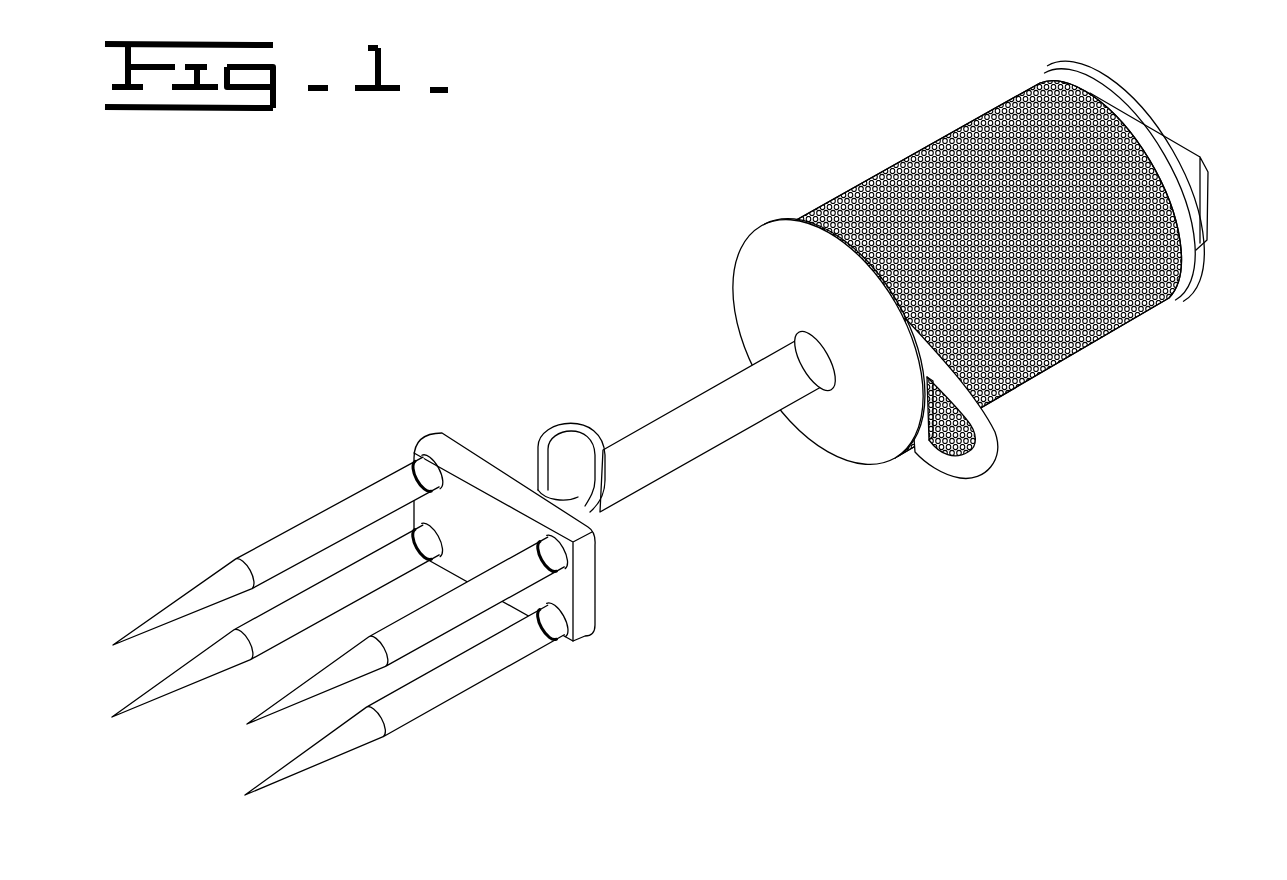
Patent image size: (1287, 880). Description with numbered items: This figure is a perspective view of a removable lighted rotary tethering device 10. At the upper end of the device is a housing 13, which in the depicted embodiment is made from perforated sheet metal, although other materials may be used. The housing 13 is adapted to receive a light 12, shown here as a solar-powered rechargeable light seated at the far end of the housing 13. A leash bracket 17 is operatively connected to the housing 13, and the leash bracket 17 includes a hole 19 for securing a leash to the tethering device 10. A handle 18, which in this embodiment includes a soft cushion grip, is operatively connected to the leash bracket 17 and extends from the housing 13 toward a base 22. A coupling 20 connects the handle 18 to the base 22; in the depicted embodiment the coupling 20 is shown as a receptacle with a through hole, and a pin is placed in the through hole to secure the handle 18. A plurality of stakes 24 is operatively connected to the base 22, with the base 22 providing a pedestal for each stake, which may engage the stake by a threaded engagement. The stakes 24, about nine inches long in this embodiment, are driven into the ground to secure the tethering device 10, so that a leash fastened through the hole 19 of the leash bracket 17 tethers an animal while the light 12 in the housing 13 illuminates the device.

The tethering device 10 is at (992, 657).
The light 12 is at (1210, 177).
The housing 13 is at (978, 303).
The leash bracket 17 is at (989, 431).
The handle 18 is at (677, 407).
The hole 19 is at (958, 436).
The coupling 20 is at (530, 455).
The base 22 is at (588, 592).
The stakes 24 is at (334, 518).